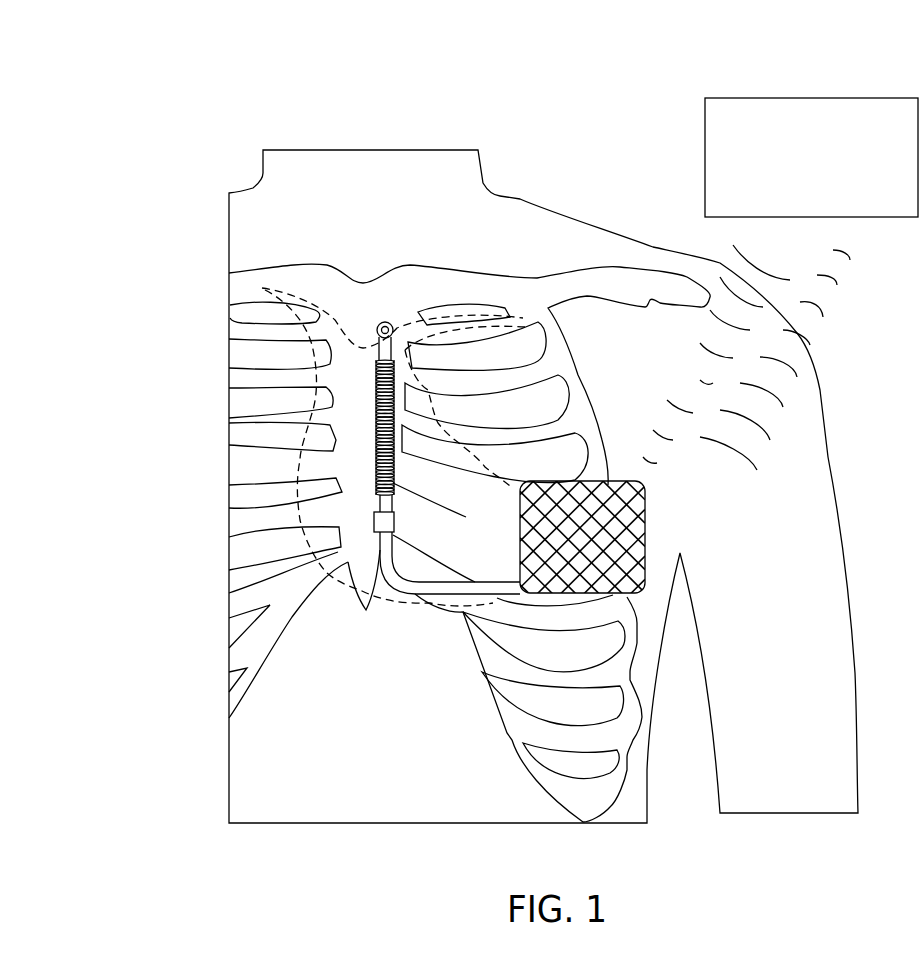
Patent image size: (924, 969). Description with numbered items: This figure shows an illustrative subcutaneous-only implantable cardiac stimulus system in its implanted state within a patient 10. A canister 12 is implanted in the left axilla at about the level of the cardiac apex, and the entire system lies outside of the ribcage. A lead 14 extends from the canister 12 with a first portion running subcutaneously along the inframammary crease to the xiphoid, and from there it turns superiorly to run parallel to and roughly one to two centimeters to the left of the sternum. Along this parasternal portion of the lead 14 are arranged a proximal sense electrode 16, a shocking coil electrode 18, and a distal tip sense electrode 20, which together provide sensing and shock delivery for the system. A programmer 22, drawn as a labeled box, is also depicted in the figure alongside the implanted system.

The patient 10 is at (538, 218).
The canister 12 is at (643, 522).
The lead 14 is at (462, 594).
The proximal sense electrode 16 is at (374, 520).
The shocking coil electrode 18 is at (372, 428).
The distal tip sense electrode 20 is at (385, 322).
The programmer 22 is at (812, 98).